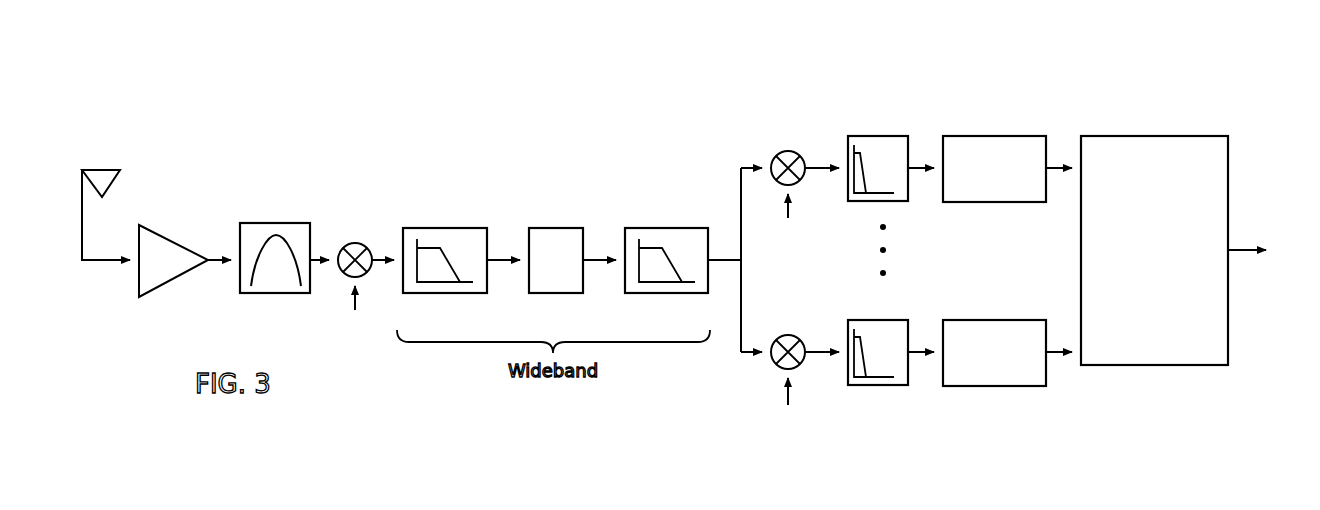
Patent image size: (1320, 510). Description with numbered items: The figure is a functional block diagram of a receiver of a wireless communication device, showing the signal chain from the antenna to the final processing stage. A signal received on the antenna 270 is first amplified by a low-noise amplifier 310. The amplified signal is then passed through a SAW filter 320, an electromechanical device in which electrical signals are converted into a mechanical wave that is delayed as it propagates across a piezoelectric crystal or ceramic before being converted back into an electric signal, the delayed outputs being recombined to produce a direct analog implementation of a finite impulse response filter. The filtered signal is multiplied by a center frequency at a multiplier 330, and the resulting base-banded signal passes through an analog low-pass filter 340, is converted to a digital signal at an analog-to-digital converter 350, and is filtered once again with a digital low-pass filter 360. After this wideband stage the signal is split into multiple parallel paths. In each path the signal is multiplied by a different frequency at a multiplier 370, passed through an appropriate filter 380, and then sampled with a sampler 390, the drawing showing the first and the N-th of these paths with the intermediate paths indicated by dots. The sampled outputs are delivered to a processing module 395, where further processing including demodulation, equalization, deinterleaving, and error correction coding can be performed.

The antenna 270 is at (104, 204).
The low-noise amplifier 310 is at (146, 297).
The SAW filter 320 is at (275, 293).
The multiplier 330 is at (356, 243).
The analog low-pass filter 340 is at (448, 293).
The analog-to-digital converter 350 is at (551, 293).
The digital low-pass filter 360 is at (660, 293).
The multiplier 370 is at (780, 152).
The filter 380 is at (870, 136).
The sampler 390 is at (995, 136).
The processing module 395 is at (1165, 136).